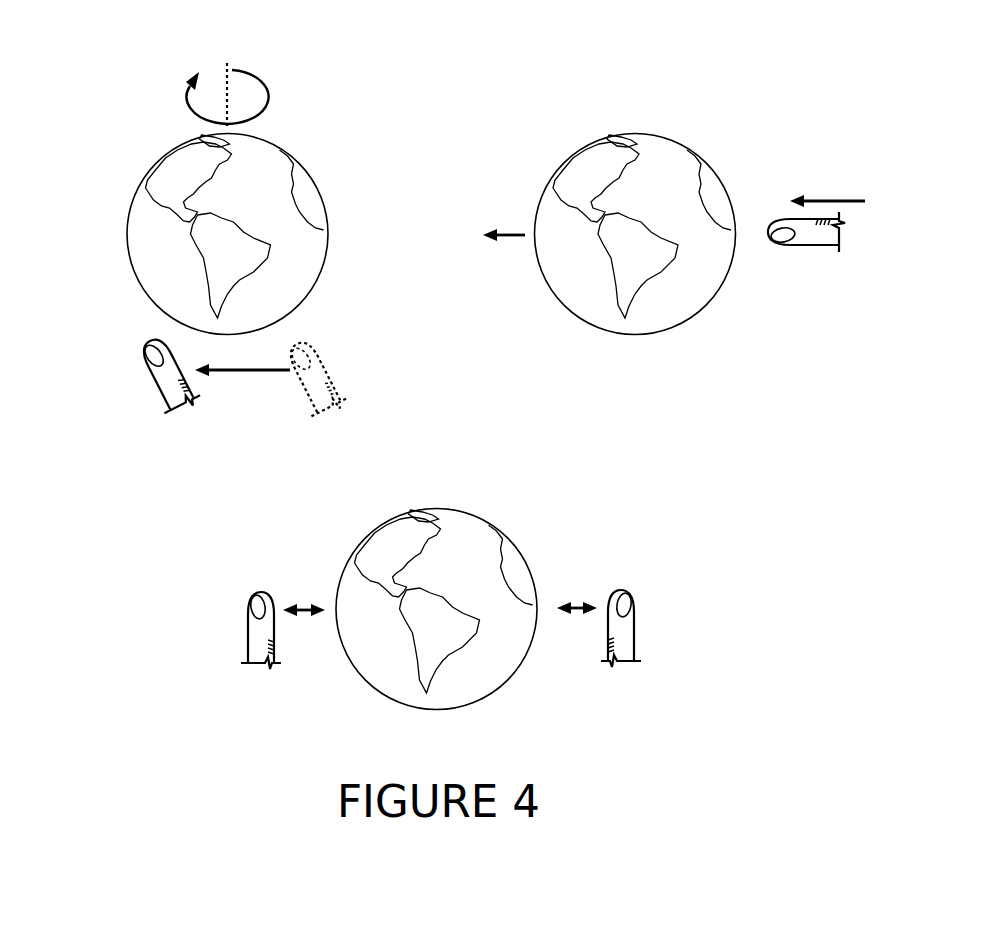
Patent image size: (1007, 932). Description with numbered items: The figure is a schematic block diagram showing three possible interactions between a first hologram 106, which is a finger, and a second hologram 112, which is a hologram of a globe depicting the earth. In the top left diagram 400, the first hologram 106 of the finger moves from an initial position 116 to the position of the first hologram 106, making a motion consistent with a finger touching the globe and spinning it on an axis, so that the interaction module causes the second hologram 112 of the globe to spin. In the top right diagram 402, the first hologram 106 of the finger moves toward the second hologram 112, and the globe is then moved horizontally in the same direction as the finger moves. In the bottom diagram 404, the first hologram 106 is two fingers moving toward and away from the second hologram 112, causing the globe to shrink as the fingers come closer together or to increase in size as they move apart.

The top left diagram 400 is at (122, 58).
The top right diagram 402 is at (520, 75).
The bottom diagram 404 is at (282, 525).
The second hologram 112 is at (151, 301).
The first hologram 106 is at (149, 372).
The initial position 116 is at (334, 372).